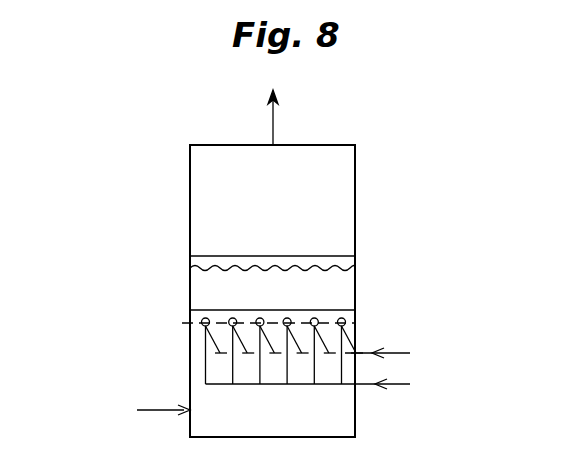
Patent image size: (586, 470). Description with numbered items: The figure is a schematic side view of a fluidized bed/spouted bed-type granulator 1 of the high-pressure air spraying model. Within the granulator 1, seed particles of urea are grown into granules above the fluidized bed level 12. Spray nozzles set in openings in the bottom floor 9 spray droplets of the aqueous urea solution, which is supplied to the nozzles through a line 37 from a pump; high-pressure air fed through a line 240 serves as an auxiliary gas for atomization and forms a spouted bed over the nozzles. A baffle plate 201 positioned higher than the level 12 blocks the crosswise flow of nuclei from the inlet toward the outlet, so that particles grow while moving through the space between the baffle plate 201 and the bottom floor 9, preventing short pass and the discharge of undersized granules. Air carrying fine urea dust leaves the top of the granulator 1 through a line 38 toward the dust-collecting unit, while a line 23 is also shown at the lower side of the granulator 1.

The granulator 1 is at (355, 178).
The line 38 is at (276, 125).
The baffle plate 201 is at (318, 256).
The level (fluidized bed) 12 is at (180, 268).
The bottom floor 9 is at (196, 326).
The line 240 is at (394, 351).
The line 37 is at (398, 390).
The gas inlet 23 is at (160, 413).